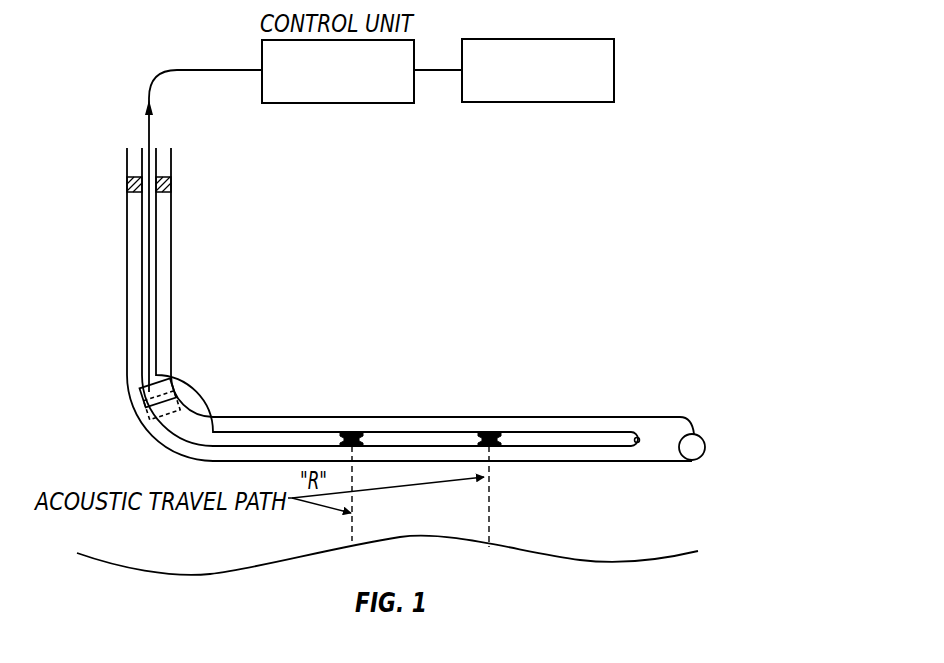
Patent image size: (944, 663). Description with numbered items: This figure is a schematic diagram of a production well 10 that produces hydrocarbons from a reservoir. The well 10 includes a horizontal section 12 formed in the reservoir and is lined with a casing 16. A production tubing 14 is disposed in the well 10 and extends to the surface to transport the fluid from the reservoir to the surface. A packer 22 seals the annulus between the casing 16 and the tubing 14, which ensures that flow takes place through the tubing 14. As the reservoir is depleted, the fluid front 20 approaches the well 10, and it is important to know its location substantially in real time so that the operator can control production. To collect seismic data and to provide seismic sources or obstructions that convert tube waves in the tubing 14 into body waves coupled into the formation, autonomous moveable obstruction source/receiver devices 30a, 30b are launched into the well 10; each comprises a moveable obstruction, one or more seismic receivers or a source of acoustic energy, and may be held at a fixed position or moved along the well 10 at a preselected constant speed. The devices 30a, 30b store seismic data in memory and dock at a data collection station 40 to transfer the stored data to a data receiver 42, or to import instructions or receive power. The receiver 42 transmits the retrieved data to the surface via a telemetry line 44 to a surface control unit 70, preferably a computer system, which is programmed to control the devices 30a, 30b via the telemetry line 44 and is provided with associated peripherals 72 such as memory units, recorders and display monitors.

The production well 10 is at (245, 406).
The horizontal section 12 is at (541, 412).
The production tubing 14 is at (185, 428).
The casing 16 is at (693, 443).
The fluid front 20 is at (582, 563).
The packer 22 is at (172, 180).
The autonomous moveable obstruction source/receiver device 30a is at (348, 432).
The autonomous moveable obstruction source/receiver device 30b is at (485, 432).
The data collection station 40 is at (172, 391).
The data receiver 42 is at (138, 405).
The telemetry line 44 is at (149, 128).
The surface control unit 70 is at (415, 47).
The peripherals 72 is at (614, 45).